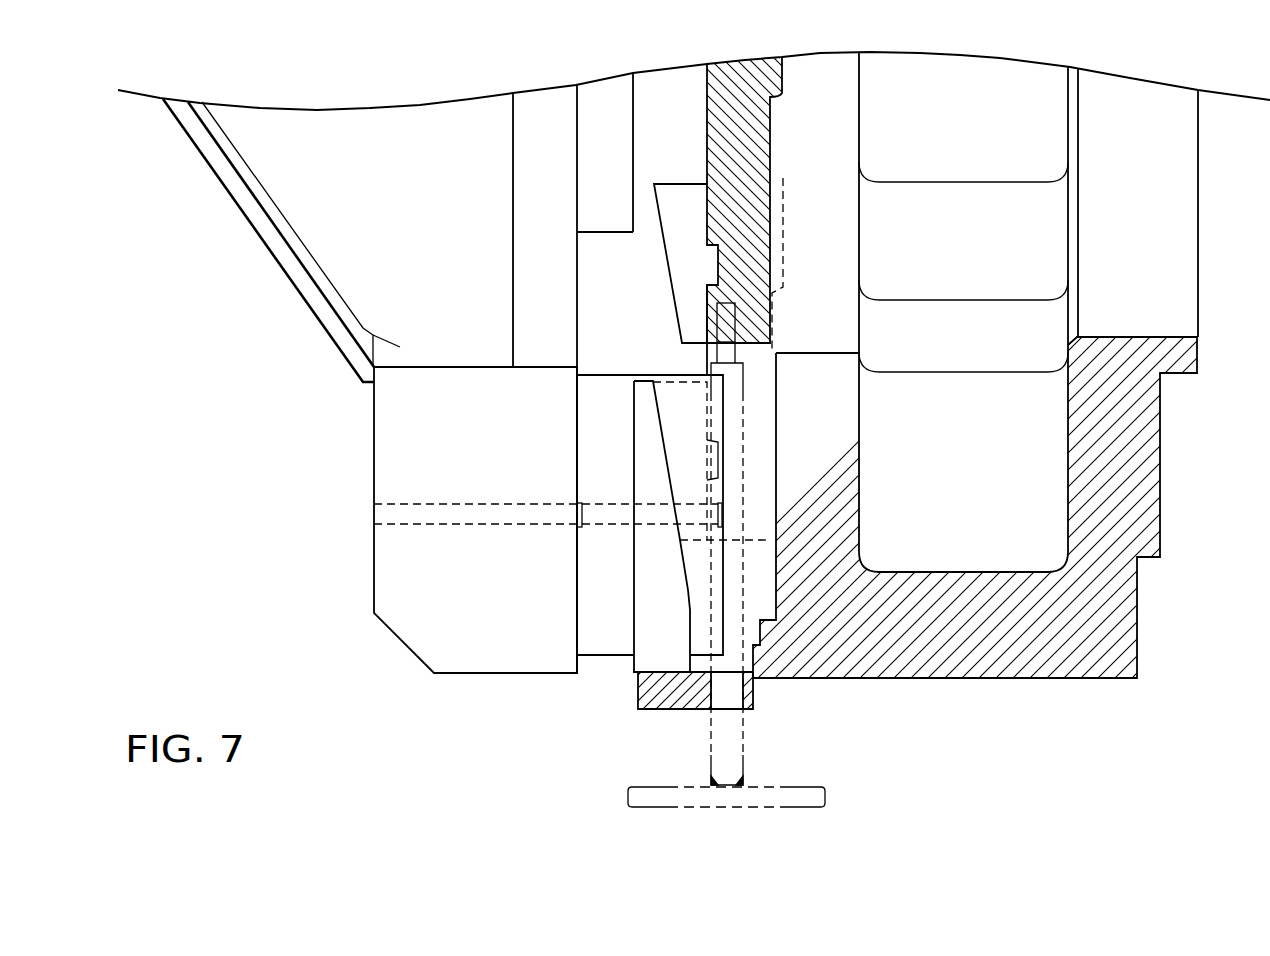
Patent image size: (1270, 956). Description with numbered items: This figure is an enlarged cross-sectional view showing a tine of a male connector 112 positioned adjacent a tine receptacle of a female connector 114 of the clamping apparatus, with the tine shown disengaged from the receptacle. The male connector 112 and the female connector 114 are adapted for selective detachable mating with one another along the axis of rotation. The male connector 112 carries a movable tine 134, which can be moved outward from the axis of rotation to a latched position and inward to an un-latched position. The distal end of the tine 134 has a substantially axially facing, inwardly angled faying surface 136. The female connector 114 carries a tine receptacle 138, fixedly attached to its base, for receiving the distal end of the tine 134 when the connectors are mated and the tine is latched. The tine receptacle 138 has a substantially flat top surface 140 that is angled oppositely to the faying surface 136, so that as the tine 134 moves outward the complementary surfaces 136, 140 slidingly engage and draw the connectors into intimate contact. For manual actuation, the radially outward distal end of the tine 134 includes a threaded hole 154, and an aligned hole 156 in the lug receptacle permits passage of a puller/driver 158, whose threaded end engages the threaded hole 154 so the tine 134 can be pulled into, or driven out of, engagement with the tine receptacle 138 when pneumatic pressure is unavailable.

The male connector 112 is at (410, 437).
The female connector 114 is at (1148, 494).
The tine 134 is at (727, 130).
The faying surface 136 is at (667, 273).
The tine receptacle 138 is at (712, 598).
The top surface 140 is at (640, 470).
The threaded hole 154 is at (728, 325).
The aligned hole 156 is at (728, 712).
The puller/driver 158 is at (800, 797).